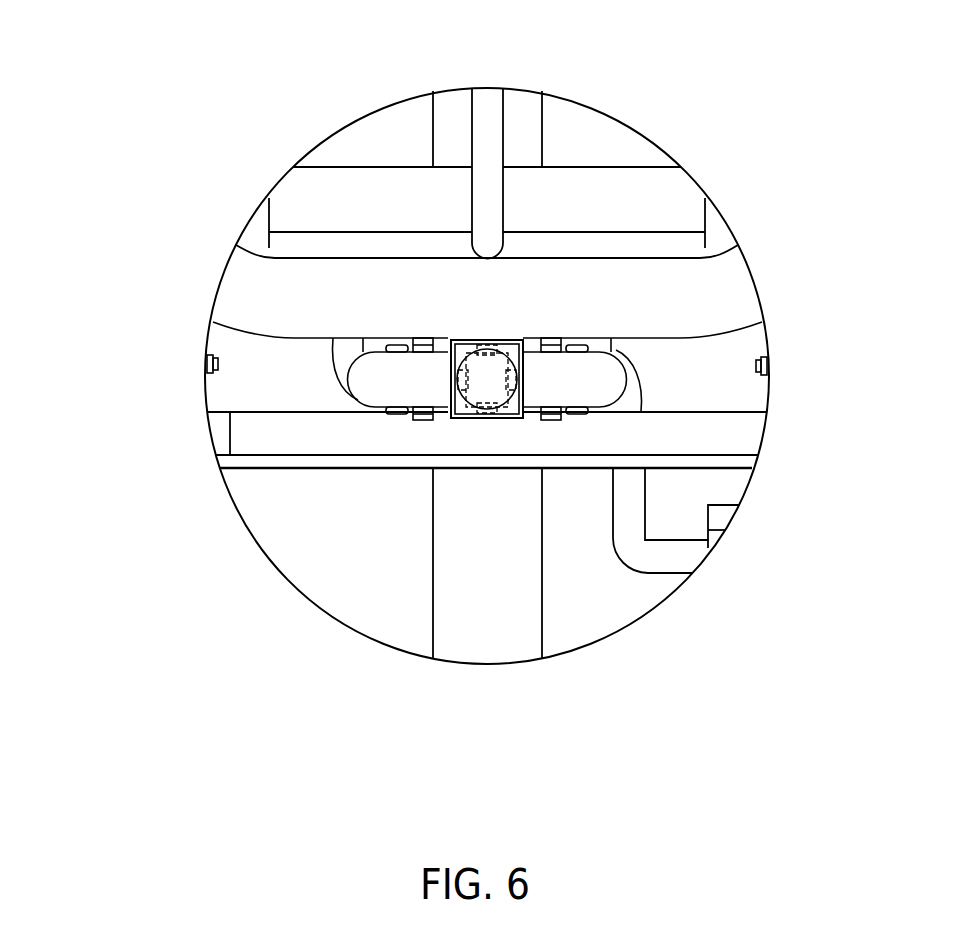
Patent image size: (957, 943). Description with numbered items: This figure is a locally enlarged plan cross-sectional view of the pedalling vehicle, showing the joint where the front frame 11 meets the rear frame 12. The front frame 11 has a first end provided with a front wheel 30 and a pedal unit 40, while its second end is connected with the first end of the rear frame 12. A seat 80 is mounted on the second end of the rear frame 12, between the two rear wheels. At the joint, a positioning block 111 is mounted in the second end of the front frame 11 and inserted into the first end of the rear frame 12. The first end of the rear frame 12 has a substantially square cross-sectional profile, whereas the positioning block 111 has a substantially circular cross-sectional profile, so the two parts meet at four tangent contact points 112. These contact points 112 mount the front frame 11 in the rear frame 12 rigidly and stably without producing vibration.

The seat 80 is at (622, 207).
The pedal unit 40 is at (342, 352).
The front frame 11 is at (452, 414).
The positioning block 111 is at (505, 418).
The tangent contact points 112 is at (497, 340).
The rear frame 12 is at (527, 383).
The front wheel 30 is at (465, 563).